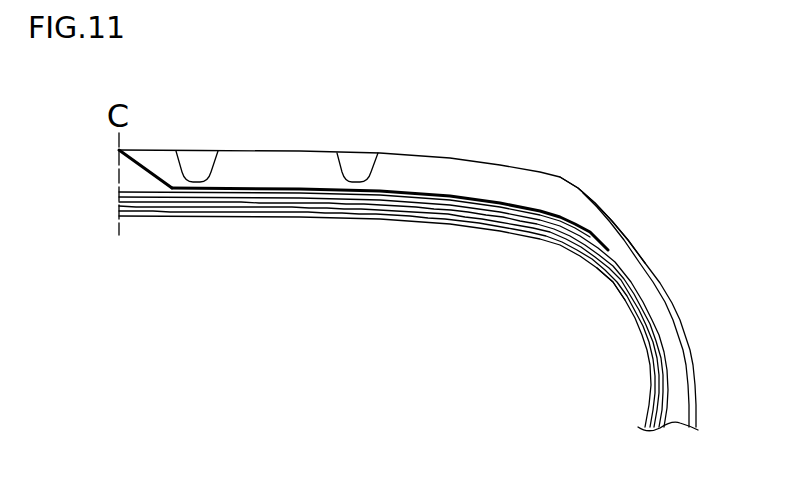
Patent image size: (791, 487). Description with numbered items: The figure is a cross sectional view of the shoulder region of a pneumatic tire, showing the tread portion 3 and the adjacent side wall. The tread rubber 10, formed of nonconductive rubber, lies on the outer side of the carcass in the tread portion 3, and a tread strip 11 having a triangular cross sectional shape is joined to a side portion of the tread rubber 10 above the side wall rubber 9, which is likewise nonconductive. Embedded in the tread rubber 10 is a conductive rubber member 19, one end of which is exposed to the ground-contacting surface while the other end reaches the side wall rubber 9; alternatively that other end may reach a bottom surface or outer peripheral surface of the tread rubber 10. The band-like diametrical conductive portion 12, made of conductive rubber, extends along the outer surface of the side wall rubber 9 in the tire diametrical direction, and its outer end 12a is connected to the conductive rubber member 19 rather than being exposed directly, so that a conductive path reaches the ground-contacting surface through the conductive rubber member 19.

The tread portion 3 is at (297, 145).
The side wall rubber 9 is at (683, 388).
The tread rubber 10 is at (487, 172).
The tread strip 11 is at (648, 264).
The diametrical conductive portion 12 is at (688, 346).
The outer end 12a is at (614, 283).
The conductive rubber member 19 is at (424, 189).